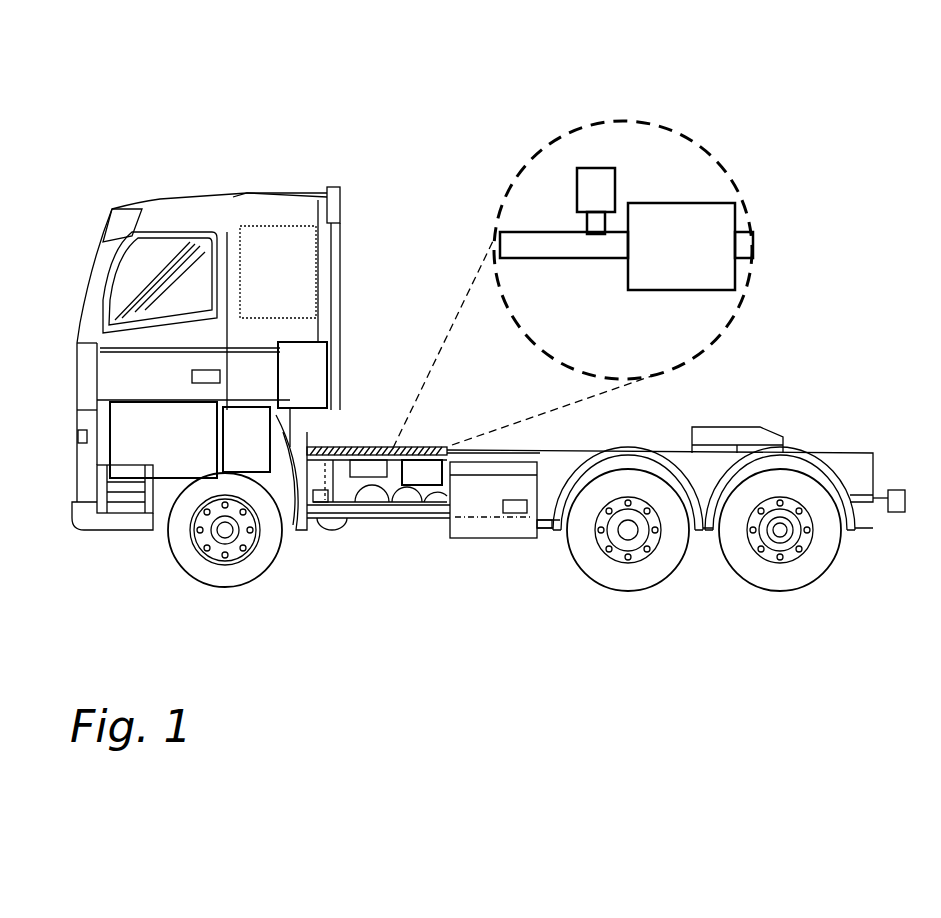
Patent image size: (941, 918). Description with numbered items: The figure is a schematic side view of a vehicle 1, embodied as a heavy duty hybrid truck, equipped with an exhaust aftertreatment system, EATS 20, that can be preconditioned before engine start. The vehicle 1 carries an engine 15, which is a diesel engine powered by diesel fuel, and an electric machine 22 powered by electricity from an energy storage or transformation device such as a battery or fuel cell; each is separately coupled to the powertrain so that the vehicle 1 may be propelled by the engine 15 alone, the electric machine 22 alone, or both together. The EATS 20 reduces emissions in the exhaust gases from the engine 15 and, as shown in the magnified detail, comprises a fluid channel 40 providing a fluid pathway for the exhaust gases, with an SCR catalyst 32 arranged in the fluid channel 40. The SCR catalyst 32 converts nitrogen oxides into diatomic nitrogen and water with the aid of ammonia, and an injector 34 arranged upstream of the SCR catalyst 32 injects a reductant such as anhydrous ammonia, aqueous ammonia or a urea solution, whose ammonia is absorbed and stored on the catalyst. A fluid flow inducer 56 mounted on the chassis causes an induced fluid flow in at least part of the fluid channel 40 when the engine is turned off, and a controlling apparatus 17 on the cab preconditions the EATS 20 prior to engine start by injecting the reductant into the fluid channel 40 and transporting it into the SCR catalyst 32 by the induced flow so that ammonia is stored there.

The vehicle 1 is at (178, 130).
The engine 15 is at (122, 478).
The controlling apparatus 17 is at (300, 342).
The exhaust aftertreatment system 20 is at (399, 404).
The electric machine 22 is at (260, 473).
The SCR catalyst 32 is at (425, 487).
The injector 34 is at (578, 168).
The fluid channel 40 is at (583, 289).
The fluid flow inducer 56 is at (370, 477).